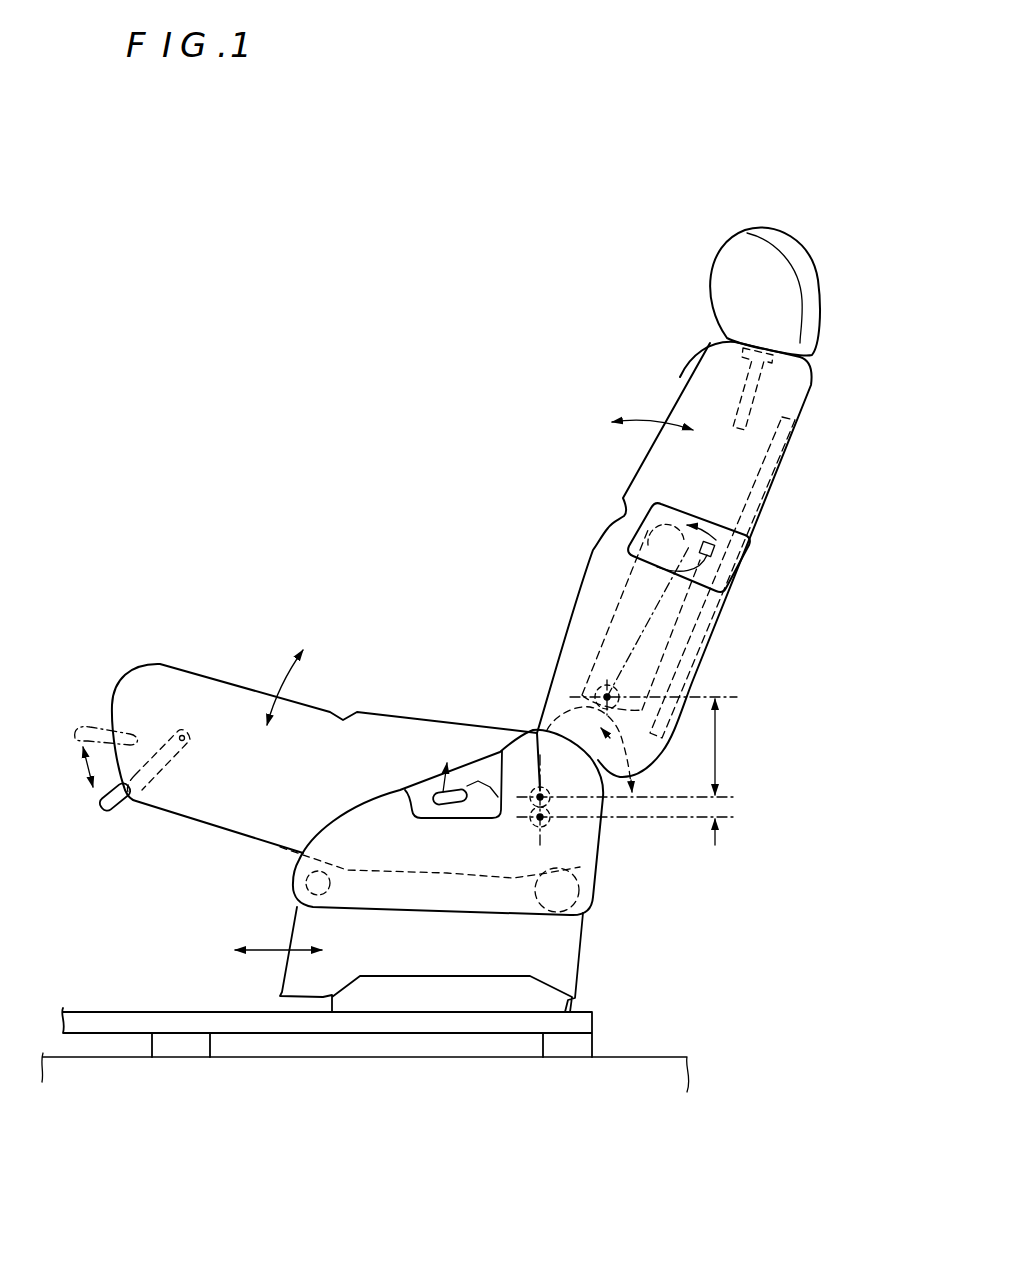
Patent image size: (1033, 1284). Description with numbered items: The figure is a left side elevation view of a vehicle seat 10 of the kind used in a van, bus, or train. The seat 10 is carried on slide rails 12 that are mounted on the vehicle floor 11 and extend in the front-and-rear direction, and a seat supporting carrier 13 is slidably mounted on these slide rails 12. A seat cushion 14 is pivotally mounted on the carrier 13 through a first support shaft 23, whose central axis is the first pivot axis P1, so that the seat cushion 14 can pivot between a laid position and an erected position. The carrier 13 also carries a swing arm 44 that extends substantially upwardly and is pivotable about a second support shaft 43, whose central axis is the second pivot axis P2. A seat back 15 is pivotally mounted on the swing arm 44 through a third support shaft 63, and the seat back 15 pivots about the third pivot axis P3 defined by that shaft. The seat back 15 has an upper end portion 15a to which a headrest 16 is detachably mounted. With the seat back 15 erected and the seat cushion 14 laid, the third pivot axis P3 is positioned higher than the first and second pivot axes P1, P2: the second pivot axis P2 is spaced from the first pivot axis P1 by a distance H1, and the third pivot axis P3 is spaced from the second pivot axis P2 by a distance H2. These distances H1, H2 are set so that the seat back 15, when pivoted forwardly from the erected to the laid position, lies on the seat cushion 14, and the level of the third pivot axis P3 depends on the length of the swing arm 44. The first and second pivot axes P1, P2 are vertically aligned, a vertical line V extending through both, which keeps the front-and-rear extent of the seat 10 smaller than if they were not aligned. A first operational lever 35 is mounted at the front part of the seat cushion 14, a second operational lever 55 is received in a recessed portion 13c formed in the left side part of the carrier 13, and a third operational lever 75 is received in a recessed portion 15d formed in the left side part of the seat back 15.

The seat 10 is at (490, 186).
The floor 11 is at (660, 1057).
The slide rails 12 is at (246, 1022).
The seat supporting carrier 13 is at (440, 967).
The recessed portion 13c is at (413, 795).
The seat cushion 14 is at (183, 683).
The seat back 15 is at (593, 552).
The upper end portion 15a is at (715, 382).
The recessed portion 15d is at (707, 586).
The headrest 16 is at (730, 262).
The first support shaft 23 is at (537, 822).
The first operational lever 35 is at (107, 813).
The second support shaft 43 is at (510, 745).
The swing arm 44 is at (560, 747).
The second operational lever 55 is at (463, 788).
The third support shaft 63 is at (596, 688).
The third operational lever 75 is at (714, 563).
The first pivot axis P1 is at (541, 823).
The second pivot axis P2 is at (626, 799).
The third pivot axis P3 is at (608, 695).
The distance H1 is at (742, 838).
The distance H2 is at (742, 747).
The vertical line V is at (540, 828).